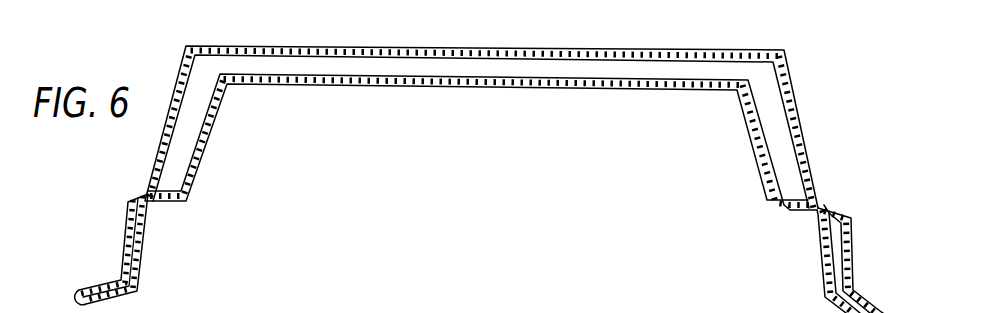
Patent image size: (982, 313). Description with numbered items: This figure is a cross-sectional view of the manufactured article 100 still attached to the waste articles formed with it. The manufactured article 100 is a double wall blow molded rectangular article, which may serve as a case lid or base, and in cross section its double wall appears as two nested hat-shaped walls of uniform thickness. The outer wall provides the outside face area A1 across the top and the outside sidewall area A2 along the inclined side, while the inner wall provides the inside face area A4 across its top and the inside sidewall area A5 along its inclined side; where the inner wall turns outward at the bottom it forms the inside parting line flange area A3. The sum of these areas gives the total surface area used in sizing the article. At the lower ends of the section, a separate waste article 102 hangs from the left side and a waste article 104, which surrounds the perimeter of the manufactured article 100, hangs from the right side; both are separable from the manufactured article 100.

The manufactured article 100 is at (481, 160).
The outside face area A1 is at (490, 48).
The outside sidewall area A2 is at (806, 146).
The inside parting line flange area A3 is at (169, 201).
The inside face area A4 is at (451, 86).
The inside sidewall area A5 is at (762, 142).
The waste article 102 is at (126, 217).
The waste article 104 is at (853, 258).